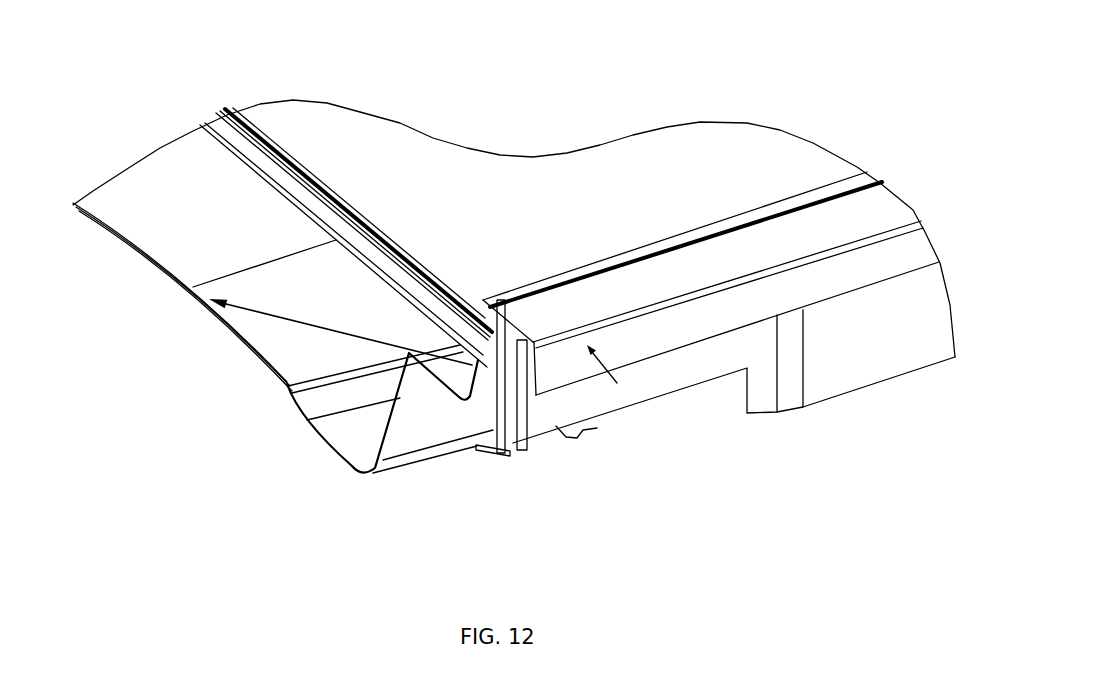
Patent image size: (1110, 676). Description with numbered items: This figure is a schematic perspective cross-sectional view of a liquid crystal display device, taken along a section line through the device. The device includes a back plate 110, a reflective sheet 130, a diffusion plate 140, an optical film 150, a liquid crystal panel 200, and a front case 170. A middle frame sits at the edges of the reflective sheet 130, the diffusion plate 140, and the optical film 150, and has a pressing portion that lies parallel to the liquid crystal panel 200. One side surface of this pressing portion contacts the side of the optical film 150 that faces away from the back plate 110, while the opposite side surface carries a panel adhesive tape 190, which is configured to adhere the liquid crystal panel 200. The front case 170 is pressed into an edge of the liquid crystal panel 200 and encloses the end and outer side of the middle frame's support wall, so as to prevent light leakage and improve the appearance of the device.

The back plate 110 is at (232, 358).
The reflective sheet 130 is at (168, 328).
The diffusion plate 140 is at (258, 183).
The optical film 150 is at (300, 172).
The front case 170 is at (623, 405).
The panel adhesive tape 190 is at (511, 458).
The liquid crystal panel 200 is at (464, 205).